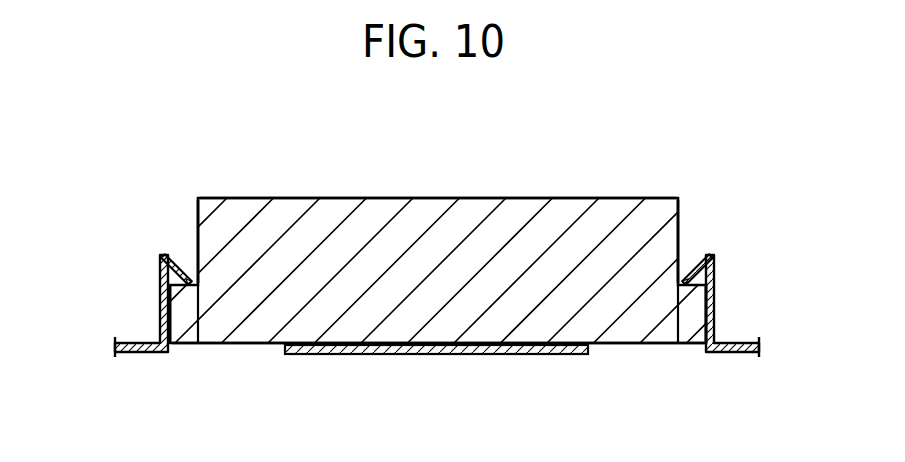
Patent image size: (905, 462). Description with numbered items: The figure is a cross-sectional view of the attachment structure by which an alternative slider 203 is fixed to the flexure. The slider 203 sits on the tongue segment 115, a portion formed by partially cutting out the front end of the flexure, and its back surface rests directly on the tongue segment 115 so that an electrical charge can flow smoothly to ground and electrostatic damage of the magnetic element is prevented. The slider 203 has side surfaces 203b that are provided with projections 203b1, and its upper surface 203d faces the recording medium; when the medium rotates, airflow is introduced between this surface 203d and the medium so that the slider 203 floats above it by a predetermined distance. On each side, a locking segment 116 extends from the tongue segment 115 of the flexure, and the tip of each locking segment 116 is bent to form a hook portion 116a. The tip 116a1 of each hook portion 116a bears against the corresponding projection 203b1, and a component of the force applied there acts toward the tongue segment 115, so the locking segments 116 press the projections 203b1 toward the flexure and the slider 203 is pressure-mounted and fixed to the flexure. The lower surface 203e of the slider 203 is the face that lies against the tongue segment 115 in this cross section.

The slider 203 is at (520, 183).
The side surface 203b is at (197, 213).
The surface facing the recording medium 203d is at (355, 198).
The lower surface of holder 203e is at (607, 349).
The projection 203b1 is at (176, 288).
The locking segment 116 is at (160, 305).
The hook portion 116a is at (176, 257).
The tip of hook portion 116a1 is at (198, 292).
The tongue segment 115 is at (392, 355).